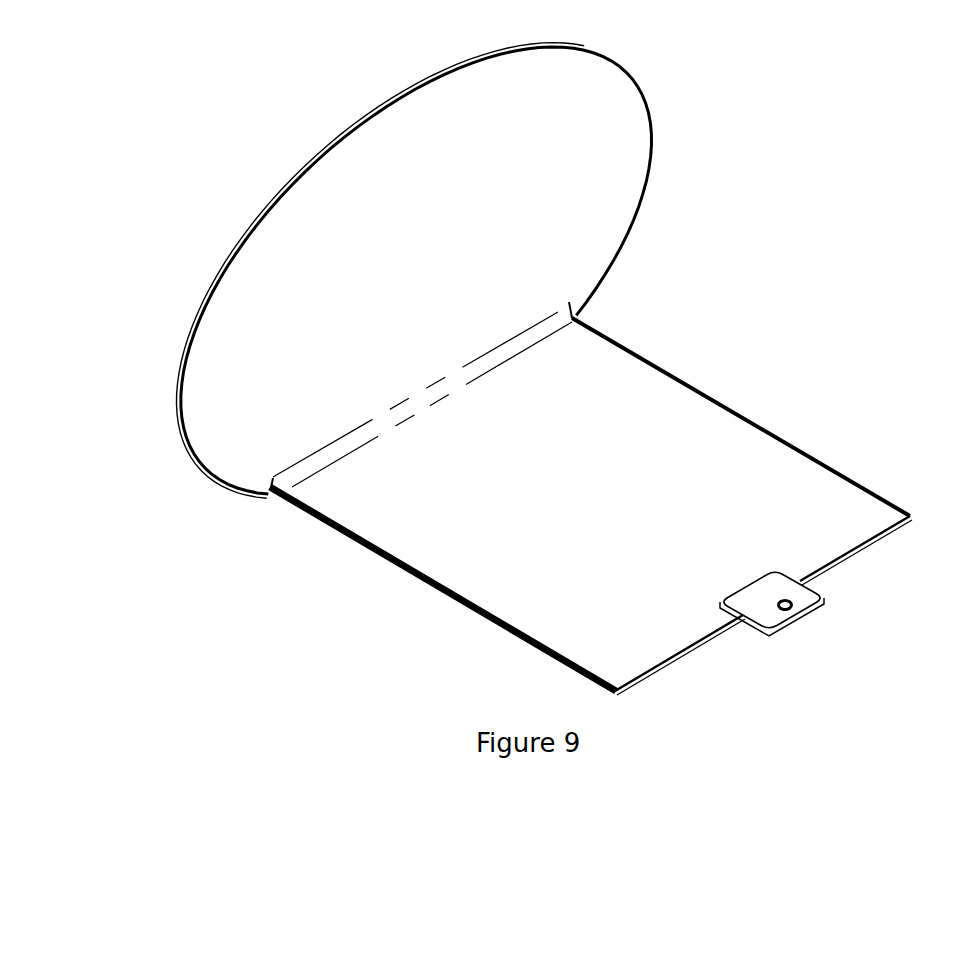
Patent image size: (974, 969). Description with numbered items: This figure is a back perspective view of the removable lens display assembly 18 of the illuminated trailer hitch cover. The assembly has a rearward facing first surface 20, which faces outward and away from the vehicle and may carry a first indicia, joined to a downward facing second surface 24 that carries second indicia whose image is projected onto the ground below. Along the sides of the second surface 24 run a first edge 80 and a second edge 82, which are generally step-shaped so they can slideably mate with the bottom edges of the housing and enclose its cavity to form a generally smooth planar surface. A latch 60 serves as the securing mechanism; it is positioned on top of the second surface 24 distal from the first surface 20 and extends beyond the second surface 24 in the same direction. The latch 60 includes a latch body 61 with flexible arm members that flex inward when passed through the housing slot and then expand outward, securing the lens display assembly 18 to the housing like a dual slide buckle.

The lens display assembly 18 is at (792, 131).
The first surface 20 is at (238, 283).
The second surface 24 is at (683, 425).
The latch 60 is at (818, 612).
The latch body 61 is at (770, 597).
The first edge 80 is at (408, 588).
The second edge 82 is at (850, 474).